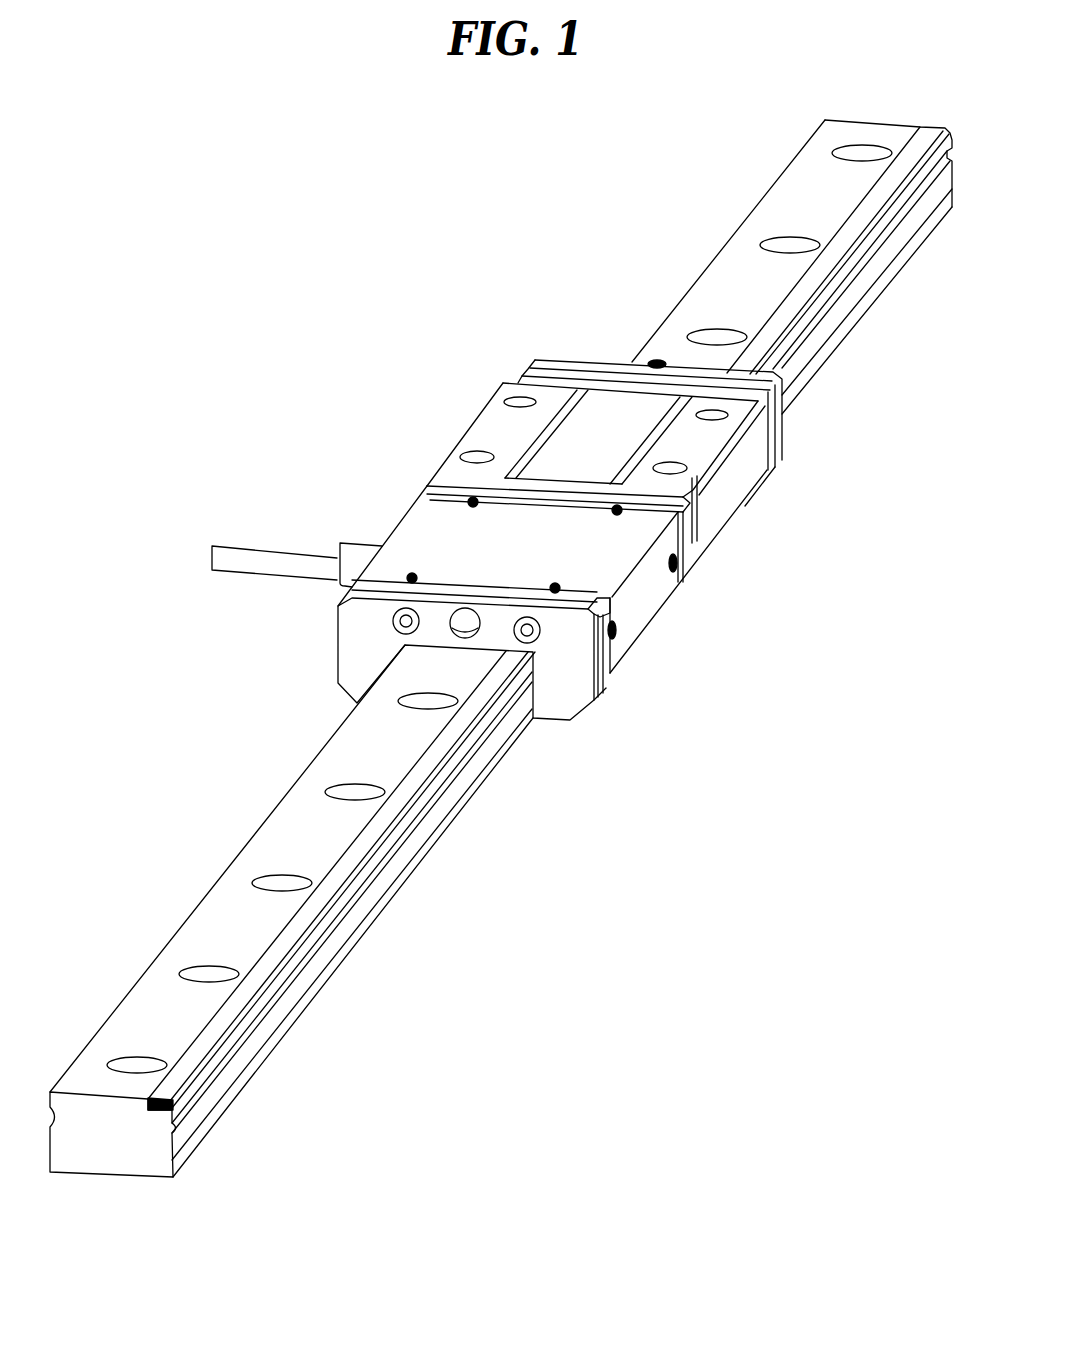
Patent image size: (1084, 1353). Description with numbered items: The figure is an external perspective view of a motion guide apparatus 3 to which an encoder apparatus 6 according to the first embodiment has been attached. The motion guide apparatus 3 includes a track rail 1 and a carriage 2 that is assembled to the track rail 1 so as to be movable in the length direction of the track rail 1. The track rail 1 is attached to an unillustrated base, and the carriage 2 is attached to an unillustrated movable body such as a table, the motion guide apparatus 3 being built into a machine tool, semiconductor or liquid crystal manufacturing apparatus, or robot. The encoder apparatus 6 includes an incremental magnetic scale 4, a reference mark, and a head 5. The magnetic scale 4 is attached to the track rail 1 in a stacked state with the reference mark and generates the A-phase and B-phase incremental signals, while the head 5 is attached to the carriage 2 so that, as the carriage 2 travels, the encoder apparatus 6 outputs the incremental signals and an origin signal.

The track rail 1 is at (501, 648).
The carriage 2 is at (717, 487).
The motion guide apparatus 3 is at (746, 692).
The magnetic scale 4 is at (415, 782).
The head 5 is at (417, 520).
The encoder apparatus 6 is at (401, 386).